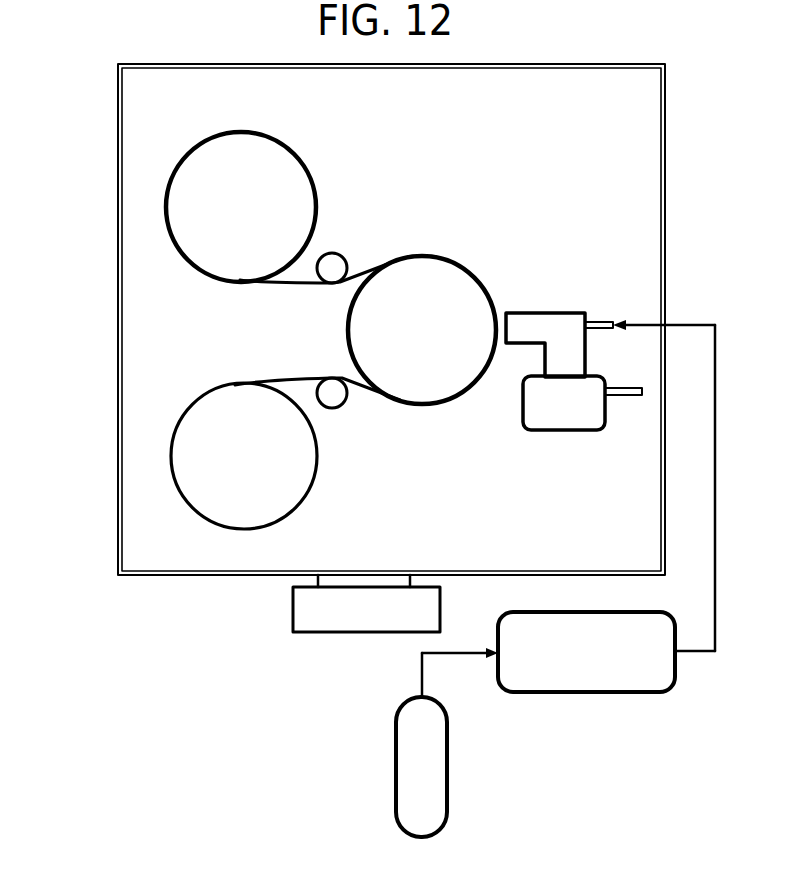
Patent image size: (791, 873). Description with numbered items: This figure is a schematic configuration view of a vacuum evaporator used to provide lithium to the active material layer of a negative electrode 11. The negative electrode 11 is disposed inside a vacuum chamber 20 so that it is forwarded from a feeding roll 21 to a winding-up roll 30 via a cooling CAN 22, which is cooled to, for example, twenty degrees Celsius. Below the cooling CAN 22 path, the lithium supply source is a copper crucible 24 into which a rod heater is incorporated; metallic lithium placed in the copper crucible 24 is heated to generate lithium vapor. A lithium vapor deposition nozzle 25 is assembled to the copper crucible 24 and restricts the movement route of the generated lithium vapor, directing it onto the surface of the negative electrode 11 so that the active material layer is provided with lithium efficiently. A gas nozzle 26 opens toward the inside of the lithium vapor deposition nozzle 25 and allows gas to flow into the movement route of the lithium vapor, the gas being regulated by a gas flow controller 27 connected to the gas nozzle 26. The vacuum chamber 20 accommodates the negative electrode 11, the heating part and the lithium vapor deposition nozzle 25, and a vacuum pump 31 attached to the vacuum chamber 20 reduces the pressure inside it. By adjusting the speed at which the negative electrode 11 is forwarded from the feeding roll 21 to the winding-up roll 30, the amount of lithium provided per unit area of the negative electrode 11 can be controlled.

The negative electrode 11 is at (270, 283).
The vacuum chamber 20 is at (158, 577).
The feeding roll 21 is at (190, 178).
The cooling CAN 22 is at (430, 278).
The copper crucible 24 is at (598, 415).
The lithium vapor deposition nozzle 25 is at (580, 310).
The gas nozzle 26 is at (603, 320).
The gas flow controller 27 is at (657, 690).
The winding-up roll 30 is at (187, 457).
The vacuum pump 31 is at (293, 633).